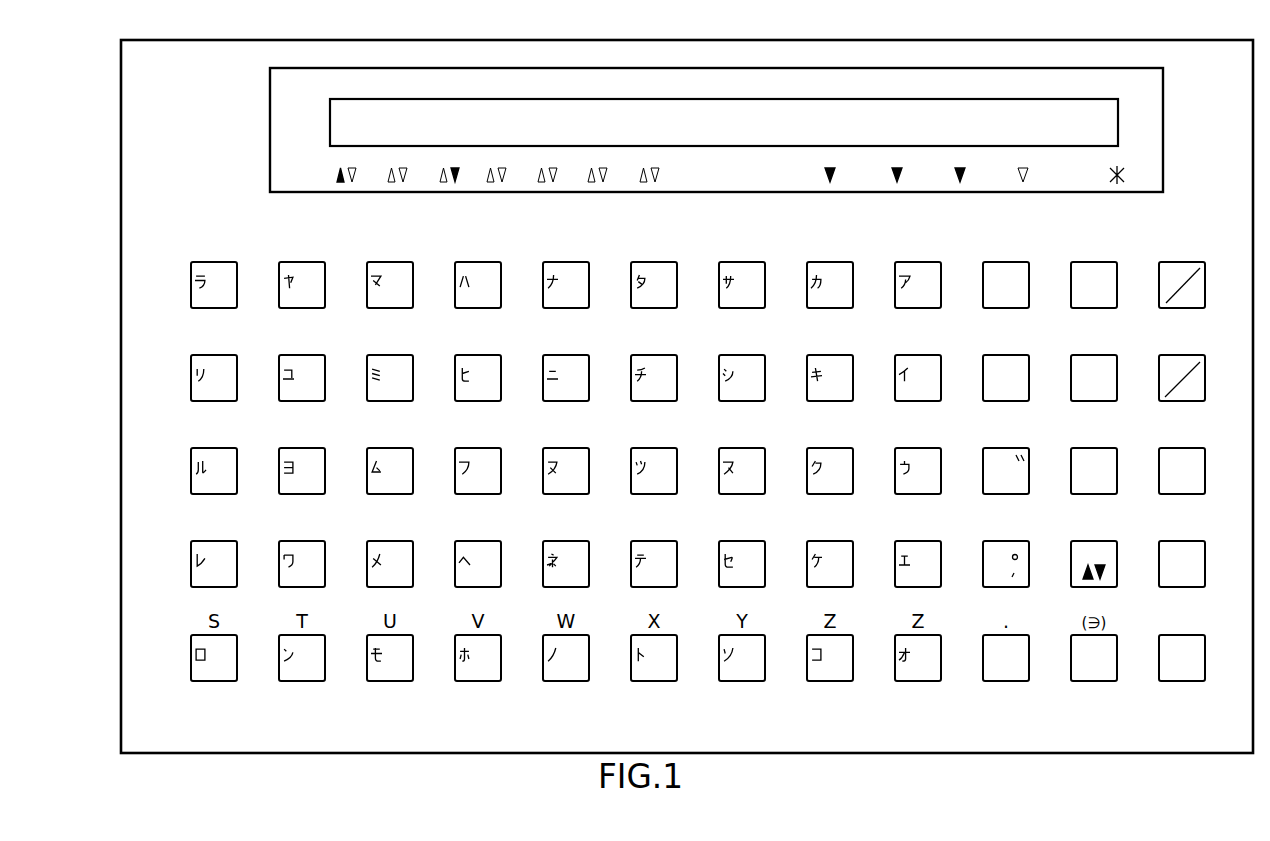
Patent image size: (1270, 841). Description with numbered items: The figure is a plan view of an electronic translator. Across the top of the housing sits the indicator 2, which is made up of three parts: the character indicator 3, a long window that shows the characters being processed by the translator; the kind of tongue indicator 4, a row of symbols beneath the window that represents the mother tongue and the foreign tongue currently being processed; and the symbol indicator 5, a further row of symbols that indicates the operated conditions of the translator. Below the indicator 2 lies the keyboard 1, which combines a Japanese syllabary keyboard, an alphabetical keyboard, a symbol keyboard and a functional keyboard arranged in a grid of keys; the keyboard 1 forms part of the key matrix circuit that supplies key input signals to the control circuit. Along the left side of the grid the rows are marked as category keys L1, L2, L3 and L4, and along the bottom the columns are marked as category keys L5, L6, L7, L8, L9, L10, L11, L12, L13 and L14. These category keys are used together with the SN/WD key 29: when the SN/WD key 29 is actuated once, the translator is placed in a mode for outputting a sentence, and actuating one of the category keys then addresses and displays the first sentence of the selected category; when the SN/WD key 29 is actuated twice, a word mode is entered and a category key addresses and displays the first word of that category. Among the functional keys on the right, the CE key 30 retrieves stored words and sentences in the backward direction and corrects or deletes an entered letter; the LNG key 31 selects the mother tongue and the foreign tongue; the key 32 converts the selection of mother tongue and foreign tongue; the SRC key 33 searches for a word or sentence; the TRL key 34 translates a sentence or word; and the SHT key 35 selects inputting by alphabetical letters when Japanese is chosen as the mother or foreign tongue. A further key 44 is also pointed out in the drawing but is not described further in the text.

The keyboard 1 is at (633, 490).
The indicator 2 is at (713, 147).
The character indicator 3 is at (527, 105).
The kind of tongue indicator 4 is at (422, 170).
The symbol indicator 5 is at (983, 163).
The SN/WD key 29 is at (1204, 276).
The CE key 30 is at (1103, 360).
The LNG key 31 is at (1097, 452).
The language conversion key 32 is at (1105, 547).
The SRC key 33 is at (1203, 647).
The TRL key 34 is at (1117, 655).
The SHT key 35 is at (1017, 266).
The character key 44 is at (455, 485).
The category key L1 is at (690, 270).
The category key L2 is at (671, 364).
The category key L3 is at (671, 564).
The category key L4 is at (672, 551).
The category key L5 is at (217, 681).
The category key L6 is at (305, 681).
The category key L7 is at (393, 681).
The category key L8 is at (481, 681).
The category key L9 is at (569, 681).
The category key L10 is at (657, 681).
The category key L11 is at (745, 681).
The category key L12 is at (833, 681).
The category key L13 is at (921, 681).
The category key L14 is at (1009, 681).